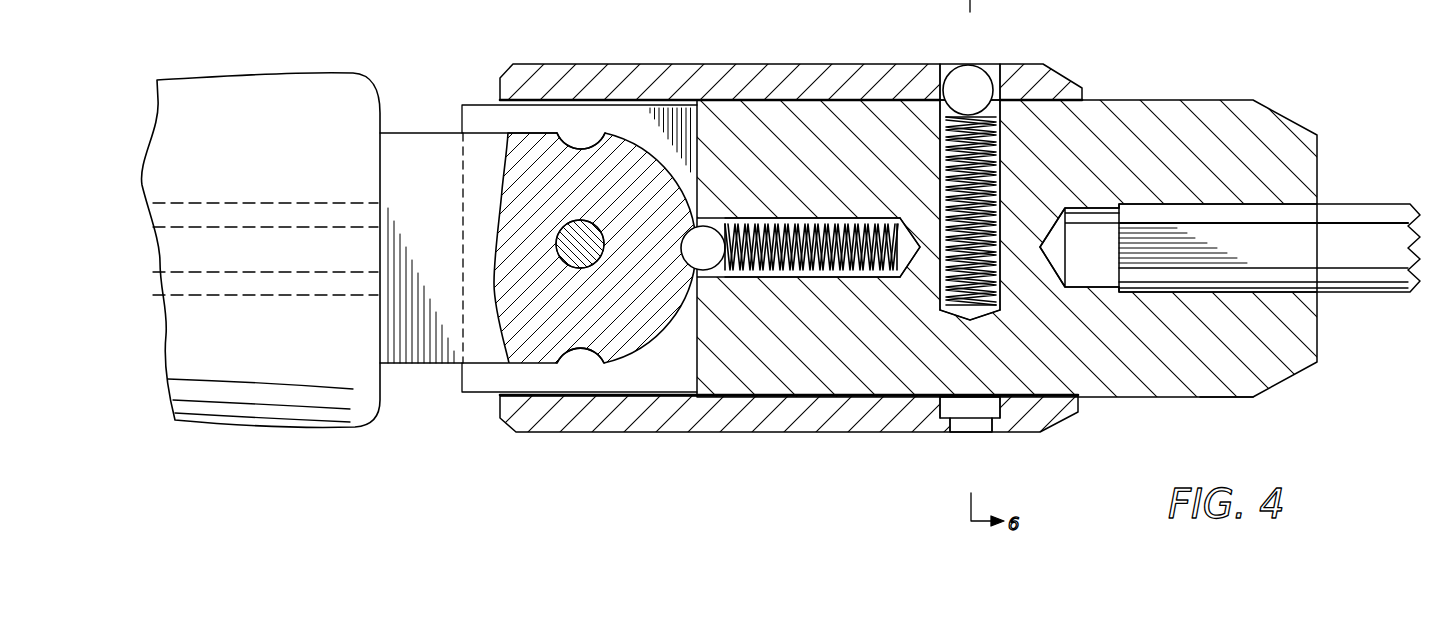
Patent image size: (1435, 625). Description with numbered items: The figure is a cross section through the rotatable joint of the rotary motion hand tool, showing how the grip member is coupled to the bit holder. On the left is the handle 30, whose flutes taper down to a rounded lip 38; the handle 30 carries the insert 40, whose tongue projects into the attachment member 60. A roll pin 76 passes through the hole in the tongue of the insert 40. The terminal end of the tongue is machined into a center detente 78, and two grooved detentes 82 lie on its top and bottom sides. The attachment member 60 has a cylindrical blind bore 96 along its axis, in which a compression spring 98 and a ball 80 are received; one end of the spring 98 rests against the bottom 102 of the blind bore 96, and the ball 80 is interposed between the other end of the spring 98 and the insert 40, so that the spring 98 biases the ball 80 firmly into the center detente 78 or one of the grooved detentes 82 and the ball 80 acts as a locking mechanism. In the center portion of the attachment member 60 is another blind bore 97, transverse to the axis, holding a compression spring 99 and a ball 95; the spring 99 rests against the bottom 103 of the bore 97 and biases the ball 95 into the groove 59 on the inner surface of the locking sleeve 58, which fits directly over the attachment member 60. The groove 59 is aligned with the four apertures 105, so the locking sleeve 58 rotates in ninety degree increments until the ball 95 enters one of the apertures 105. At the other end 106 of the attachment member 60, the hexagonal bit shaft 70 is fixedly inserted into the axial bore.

The handle 30 is at (251, 78).
The rounded lip 38 is at (313, 418).
The insert 40 is at (442, 133).
The locking sleeve 58 is at (745, 64).
The groove 59 is at (937, 82).
The attachment member 60 is at (1183, 104).
The bit shaft 70 is at (1388, 204).
The roll pin 76 is at (583, 242).
The center detente 78 is at (680, 285).
The ball 80 is at (712, 253).
The grooved detentes 82 is at (575, 147).
The ball 95 is at (975, 80).
The cylindrical blind bore 96 is at (777, 257).
The blind bore 97 is at (985, 150).
The compression spring 98 is at (847, 257).
The compression spring 99 is at (940, 185).
The bottom of blind bore 102 is at (897, 262).
The bottom of blind bore 103 is at (945, 290).
The apertures 105 is at (960, 64).
The other end 106 is at (1240, 378).